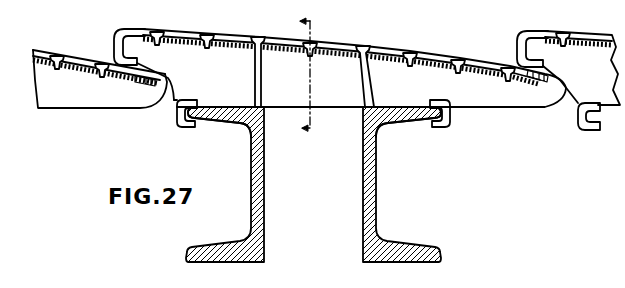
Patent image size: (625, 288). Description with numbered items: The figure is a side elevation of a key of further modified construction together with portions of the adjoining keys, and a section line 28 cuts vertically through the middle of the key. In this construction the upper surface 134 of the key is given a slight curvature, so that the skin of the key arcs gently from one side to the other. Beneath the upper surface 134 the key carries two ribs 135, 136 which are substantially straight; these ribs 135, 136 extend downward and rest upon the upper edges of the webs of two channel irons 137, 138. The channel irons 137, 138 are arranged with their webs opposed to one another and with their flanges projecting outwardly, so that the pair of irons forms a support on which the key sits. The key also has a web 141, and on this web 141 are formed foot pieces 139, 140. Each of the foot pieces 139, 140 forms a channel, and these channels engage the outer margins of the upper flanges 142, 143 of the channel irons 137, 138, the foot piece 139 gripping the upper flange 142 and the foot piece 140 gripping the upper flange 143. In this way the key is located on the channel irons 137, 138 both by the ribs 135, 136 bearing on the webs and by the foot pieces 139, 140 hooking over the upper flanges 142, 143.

The section line 28- 28 is at (293, 75).
The upper surface 134 is at (383, 48).
The rib 135 is at (363, 90).
The rib 136 is at (257, 77).
The channel iron 137 is at (262, 199).
The channel iron 138 is at (372, 202).
The foot piece 139 is at (175, 121).
The foot piece 140 is at (440, 123).
The web 141 is at (75, 98).
The upper flange 142 is at (225, 124).
The upper flange 143 is at (402, 118).